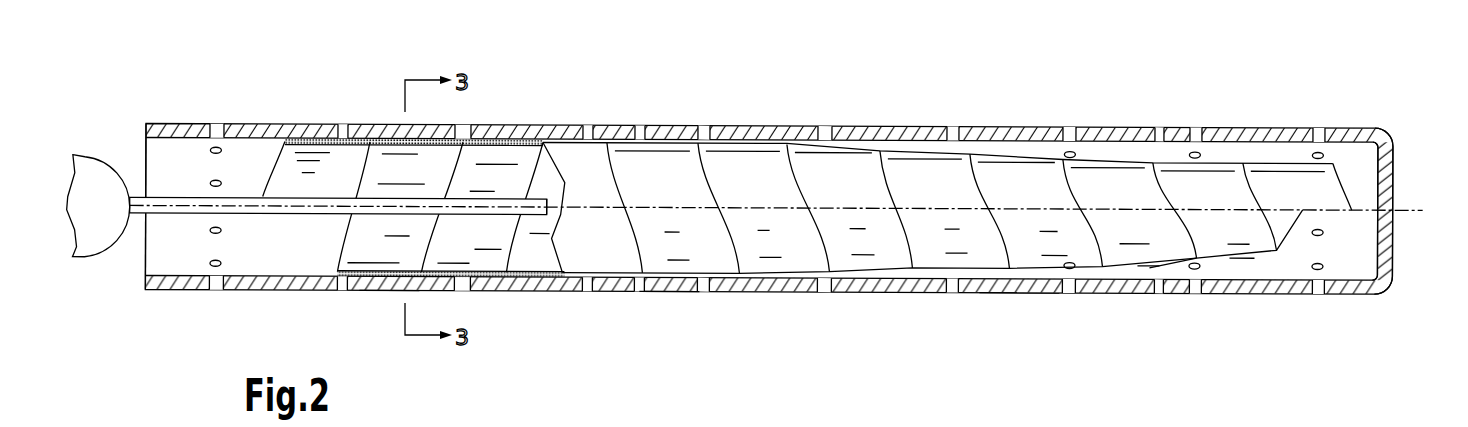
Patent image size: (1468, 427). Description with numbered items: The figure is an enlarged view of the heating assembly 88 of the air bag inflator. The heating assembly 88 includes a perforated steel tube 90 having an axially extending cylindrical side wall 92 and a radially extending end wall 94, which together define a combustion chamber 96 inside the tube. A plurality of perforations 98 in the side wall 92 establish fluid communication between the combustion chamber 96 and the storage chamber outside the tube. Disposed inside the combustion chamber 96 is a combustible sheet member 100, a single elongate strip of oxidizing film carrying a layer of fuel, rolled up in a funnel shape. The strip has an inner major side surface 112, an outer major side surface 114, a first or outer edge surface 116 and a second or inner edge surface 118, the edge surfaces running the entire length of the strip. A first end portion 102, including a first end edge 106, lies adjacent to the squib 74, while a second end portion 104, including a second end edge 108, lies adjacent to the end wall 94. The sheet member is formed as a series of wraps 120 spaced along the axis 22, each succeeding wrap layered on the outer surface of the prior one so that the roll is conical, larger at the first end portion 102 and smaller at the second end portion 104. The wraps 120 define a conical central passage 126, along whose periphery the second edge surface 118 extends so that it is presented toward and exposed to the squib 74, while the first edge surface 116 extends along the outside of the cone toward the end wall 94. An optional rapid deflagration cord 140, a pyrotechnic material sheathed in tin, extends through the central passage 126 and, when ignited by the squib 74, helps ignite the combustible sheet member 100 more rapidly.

The axis 22 is at (1423, 213).
The squib 74 is at (110, 240).
The heating assembly 88 is at (1027, 324).
The perforated steel tube 90 is at (259, 108).
The side wall 92 is at (1271, 125).
The end wall 94 is at (1394, 197).
The combustion chamber 96 is at (1352, 157).
The perforations 98 is at (343, 122).
The combustible sheet member 100 is at (666, 292).
The first end portion 102 is at (392, 294).
The second end portion 104 is at (1175, 287).
The first end edge 106 is at (307, 198).
The second end edge 108 is at (1331, 214).
The inner major side surface 112 is at (488, 172).
The outer major side surface 114 is at (936, 183).
The first edge surface 116 is at (618, 166).
The second edge surface 118 is at (503, 142).
The wraps 120 is at (757, 250).
The central passage 126 is at (378, 185).
The rapid deflagration cord 140 is at (513, 214).